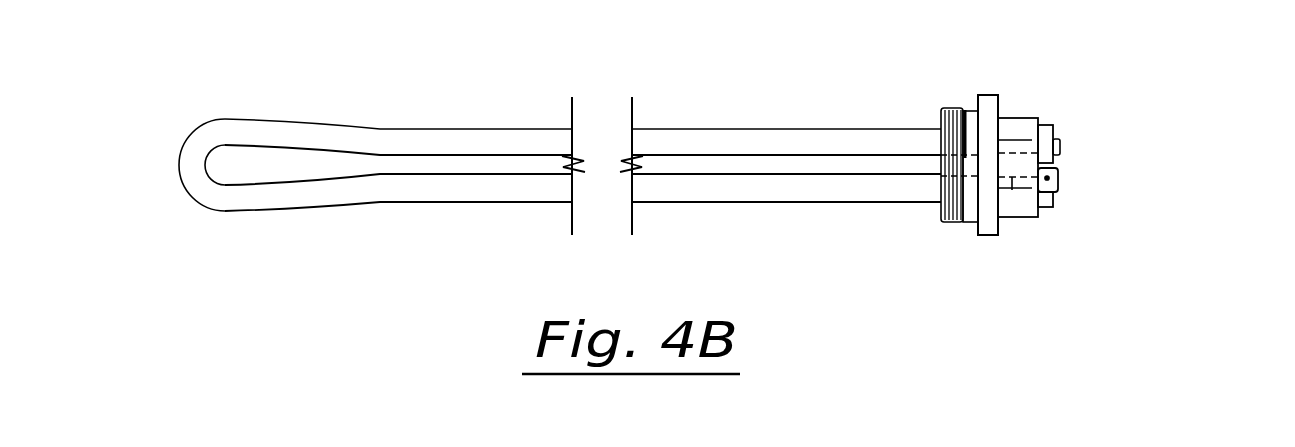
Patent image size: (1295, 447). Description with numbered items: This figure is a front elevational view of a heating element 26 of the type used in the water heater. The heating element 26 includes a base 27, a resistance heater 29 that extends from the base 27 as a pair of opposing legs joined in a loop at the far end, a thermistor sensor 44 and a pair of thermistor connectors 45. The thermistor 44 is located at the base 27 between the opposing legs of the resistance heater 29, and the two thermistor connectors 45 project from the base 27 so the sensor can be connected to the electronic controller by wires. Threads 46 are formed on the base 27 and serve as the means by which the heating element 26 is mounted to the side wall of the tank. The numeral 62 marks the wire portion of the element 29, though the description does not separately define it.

The heating element 26 is at (322, 233).
The resistance heater 29 is at (740, 129).
The resistance wire 62 is at (865, 129).
The base 27 is at (1017, 117).
The thermistor connectors 45 is at (1071, 177).
The thermistor sensor 44 is at (1012, 190).
The threads 46 is at (950, 222).